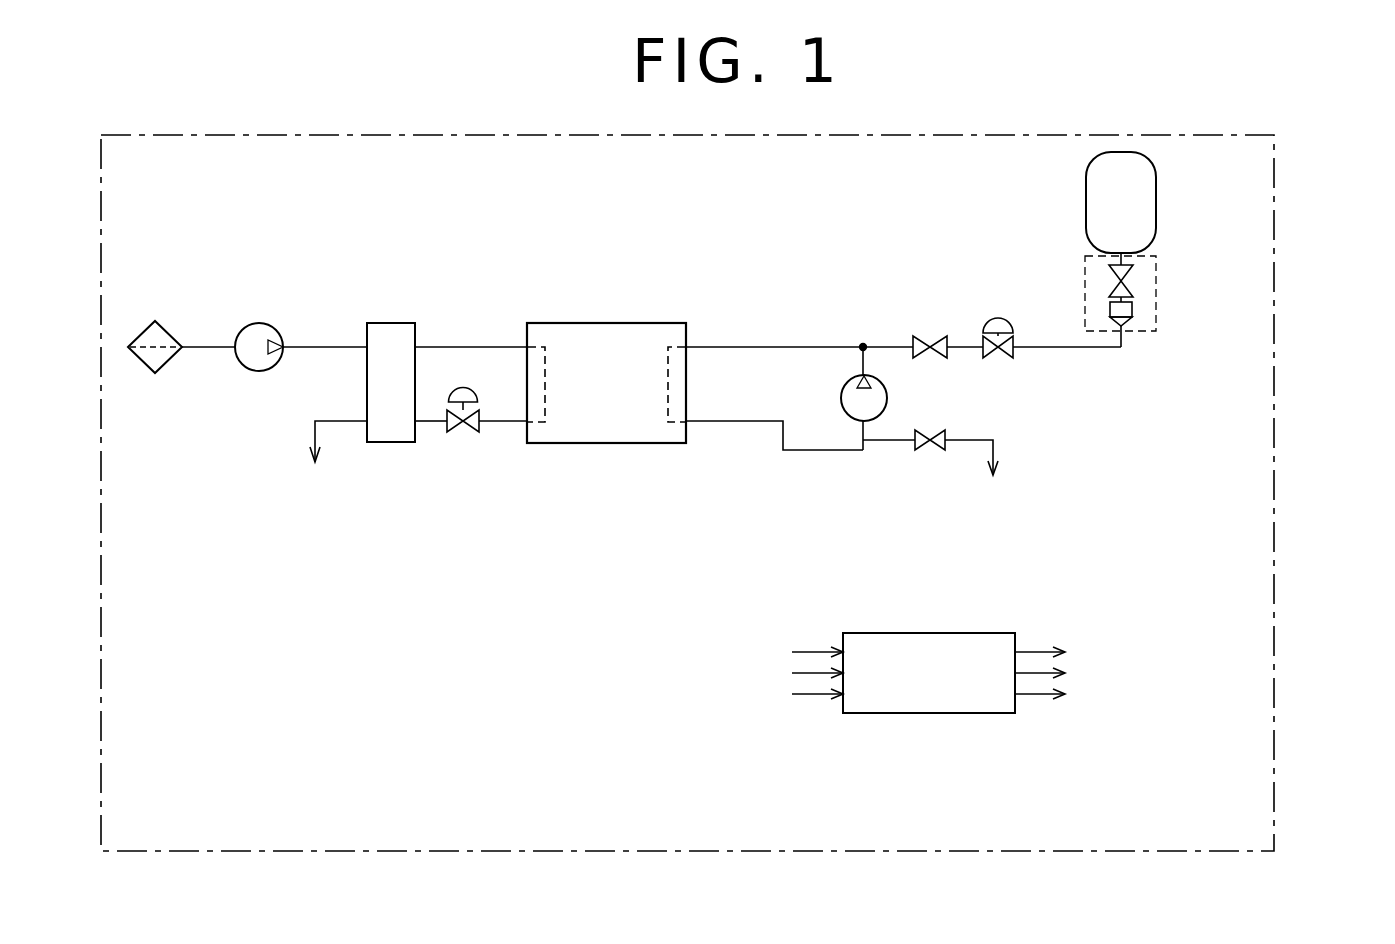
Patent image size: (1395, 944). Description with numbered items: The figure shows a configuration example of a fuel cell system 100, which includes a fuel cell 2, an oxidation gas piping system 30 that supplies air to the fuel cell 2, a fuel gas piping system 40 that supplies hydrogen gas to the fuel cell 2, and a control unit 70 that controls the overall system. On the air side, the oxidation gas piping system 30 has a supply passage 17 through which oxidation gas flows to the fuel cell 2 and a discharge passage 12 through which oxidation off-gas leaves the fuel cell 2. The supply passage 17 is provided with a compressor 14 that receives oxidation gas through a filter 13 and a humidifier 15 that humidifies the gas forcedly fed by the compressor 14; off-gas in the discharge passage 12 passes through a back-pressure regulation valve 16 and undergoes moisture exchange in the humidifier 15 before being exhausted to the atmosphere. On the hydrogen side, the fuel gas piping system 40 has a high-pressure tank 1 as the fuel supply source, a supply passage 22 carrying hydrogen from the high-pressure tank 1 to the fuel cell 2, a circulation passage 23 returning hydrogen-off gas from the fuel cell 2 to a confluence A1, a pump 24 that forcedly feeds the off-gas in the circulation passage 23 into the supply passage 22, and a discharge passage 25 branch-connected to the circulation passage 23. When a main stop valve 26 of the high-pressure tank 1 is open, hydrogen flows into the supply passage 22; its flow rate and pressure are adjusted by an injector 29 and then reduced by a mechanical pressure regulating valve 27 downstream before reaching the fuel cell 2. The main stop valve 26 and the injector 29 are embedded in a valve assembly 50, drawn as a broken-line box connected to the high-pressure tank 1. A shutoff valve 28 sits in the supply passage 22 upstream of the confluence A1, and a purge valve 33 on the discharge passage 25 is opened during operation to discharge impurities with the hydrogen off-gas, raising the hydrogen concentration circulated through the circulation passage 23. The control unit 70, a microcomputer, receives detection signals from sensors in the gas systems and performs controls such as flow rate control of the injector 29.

The fuel cell system 100 is at (1275, 198).
The filter 13 is at (172, 333).
The compressor 14 is at (257, 323).
The oxidation gas piping system 30 is at (393, 292).
The humidifier 15 is at (391, 443).
The discharge passage 12 is at (340, 423).
The back-pressure regulation valve 16 is at (465, 389).
The supply passage 17 is at (453, 346).
The fuel cell 2 is at (568, 443).
The confluence A1 is at (863, 344).
The pump 24 is at (841, 398).
The circulation passage 23 is at (815, 451).
The purge valve 33 is at (938, 451).
The discharge passage 25 is at (995, 448).
The shutoff valve 28 is at (937, 337).
The fuel gas piping system 40 is at (988, 256).
The pressure regulating valve 27 is at (1015, 346).
The supply passage 22 is at (1125, 340).
The high-pressure tank 1 is at (1157, 202).
The valve assembly 50 is at (1157, 268).
The main stop valve 26 is at (1131, 286).
The injector 29 is at (1133, 310).
The control unit 70 is at (985, 632).